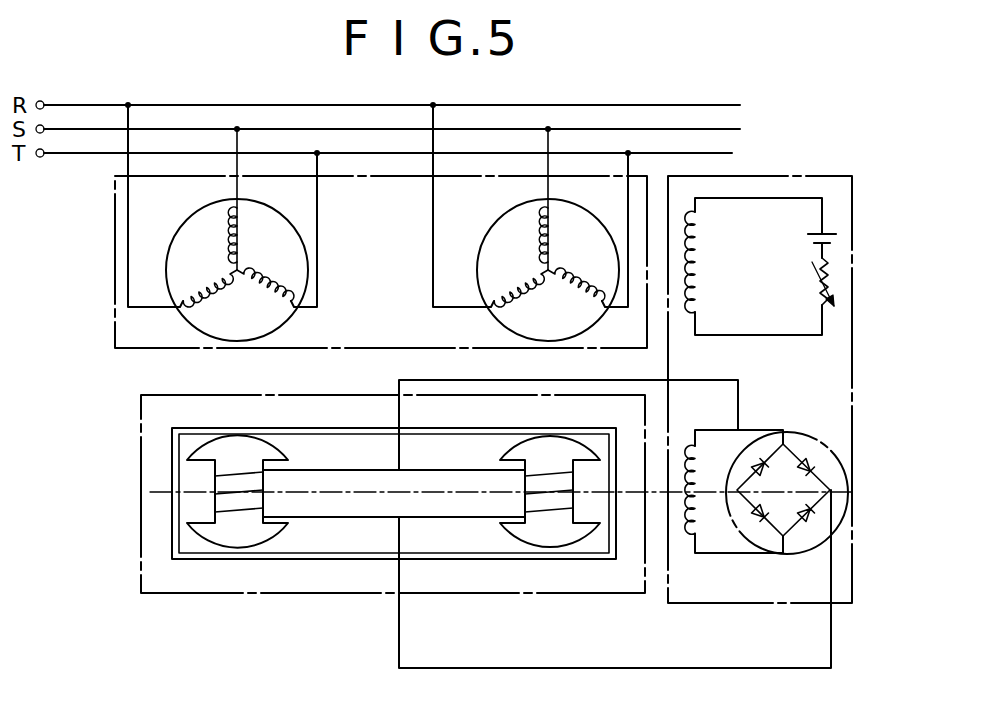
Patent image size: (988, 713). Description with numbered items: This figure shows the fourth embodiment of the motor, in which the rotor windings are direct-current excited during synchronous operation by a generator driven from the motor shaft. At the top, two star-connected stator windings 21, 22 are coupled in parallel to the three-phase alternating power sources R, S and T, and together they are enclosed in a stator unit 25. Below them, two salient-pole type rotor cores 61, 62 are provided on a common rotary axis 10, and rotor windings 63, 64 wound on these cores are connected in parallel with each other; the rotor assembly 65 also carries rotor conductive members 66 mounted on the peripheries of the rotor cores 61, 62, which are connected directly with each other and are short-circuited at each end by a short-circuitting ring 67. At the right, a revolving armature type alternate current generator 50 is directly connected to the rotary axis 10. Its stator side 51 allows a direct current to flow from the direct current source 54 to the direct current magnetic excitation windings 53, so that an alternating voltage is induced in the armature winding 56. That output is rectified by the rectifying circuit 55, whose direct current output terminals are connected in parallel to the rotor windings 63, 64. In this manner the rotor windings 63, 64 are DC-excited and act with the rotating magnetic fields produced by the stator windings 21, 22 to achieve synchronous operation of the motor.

The rotary axis 10 is at (160, 497).
The stator winding 21 is at (181, 228).
The stator winding 22 is at (487, 242).
The motor drive unit 25 is at (112, 302).
The revolving armature type alternate current generator 50 is at (808, 176).
The stator side of the revolving armature type alternate current generator 51 is at (843, 208).
The direct current magnetic excitation windings 53 is at (705, 298).
The direct current source 54 is at (838, 279).
The rectifying circuit 55 is at (813, 440).
The armature winding 56 is at (703, 520).
The salient-pole type rotor core 61 is at (237, 538).
The salient-pole type rotor core 62 is at (570, 538).
The rotor winding 63 is at (248, 472).
The rotor winding 64 is at (548, 478).
The electromagnetic brake unit 65 is at (360, 610).
The rotor conductive members 66 is at (332, 427).
The short-circuitting ring 67 is at (172, 462).